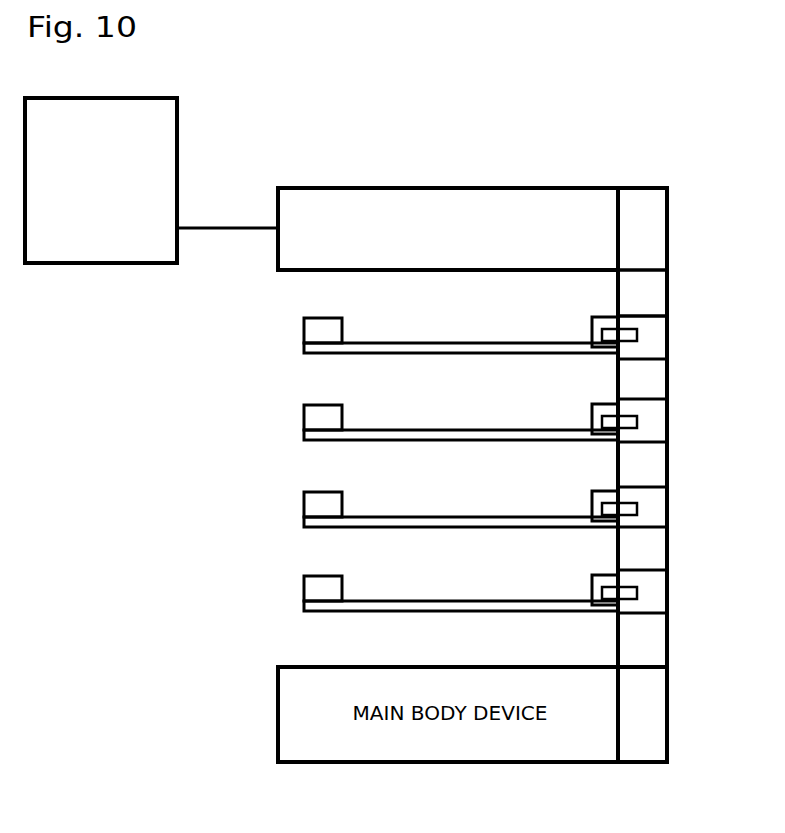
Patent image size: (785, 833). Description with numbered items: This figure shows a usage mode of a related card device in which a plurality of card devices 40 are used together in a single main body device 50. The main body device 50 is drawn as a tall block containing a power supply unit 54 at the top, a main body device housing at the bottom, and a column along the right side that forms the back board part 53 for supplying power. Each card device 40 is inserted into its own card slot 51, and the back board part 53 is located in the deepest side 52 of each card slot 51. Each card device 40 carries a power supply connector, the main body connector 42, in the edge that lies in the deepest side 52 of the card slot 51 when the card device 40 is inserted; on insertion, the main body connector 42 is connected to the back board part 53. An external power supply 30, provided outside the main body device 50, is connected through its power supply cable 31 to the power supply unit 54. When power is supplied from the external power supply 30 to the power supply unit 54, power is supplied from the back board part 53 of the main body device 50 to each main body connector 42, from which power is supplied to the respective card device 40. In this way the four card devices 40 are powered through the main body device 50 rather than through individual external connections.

The external power supply 30 is at (178, 115).
The power supply cable 31 is at (231, 230).
The card device 40 is at (452, 335).
The main body connector 42 is at (637, 336).
The main body device 50 is at (518, 166).
The card slot 51 is at (483, 272).
The deepest side 52 is at (619, 294).
The back board part 53 is at (667, 390).
The power supply unit 54 is at (378, 187).